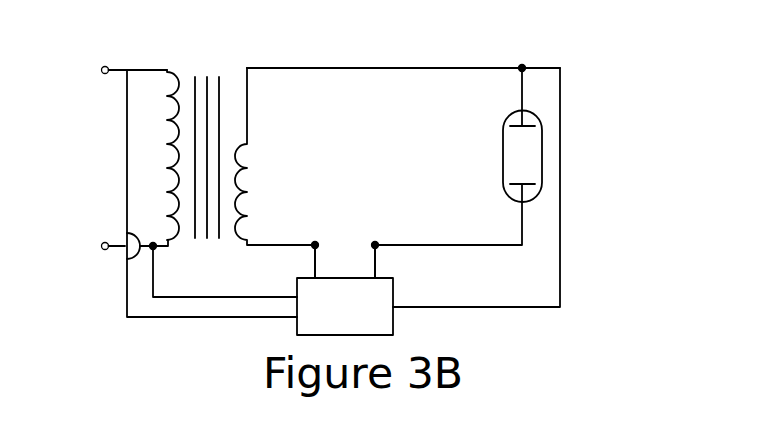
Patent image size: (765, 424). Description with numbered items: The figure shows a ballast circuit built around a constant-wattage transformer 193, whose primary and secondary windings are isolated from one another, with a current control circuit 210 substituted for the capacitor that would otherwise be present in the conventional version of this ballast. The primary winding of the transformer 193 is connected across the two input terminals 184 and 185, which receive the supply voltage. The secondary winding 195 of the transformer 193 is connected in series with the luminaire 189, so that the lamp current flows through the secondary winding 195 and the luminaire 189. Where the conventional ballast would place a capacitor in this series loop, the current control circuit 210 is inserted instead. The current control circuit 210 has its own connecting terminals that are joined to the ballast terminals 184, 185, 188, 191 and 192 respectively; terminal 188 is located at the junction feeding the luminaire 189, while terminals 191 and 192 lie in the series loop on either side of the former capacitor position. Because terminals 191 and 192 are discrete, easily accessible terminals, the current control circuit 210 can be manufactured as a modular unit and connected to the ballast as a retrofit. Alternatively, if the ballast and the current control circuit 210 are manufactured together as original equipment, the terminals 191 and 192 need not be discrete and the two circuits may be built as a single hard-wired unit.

The input terminal 184 is at (108, 72).
The input terminal 185 is at (109, 248).
The constant-wattage transformer 193 is at (203, 67).
The secondary winding 195 is at (239, 168).
The terminal 191 is at (315, 243).
The terminal 192 is at (375, 244).
The luminaire 189 is at (503, 140).
The terminal 188 is at (522, 67).
The current control circuit 210 is at (394, 290).